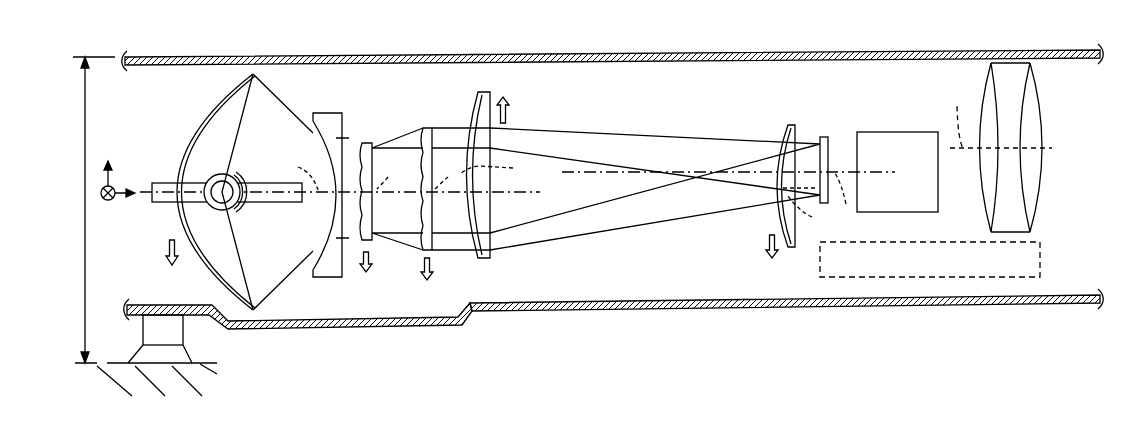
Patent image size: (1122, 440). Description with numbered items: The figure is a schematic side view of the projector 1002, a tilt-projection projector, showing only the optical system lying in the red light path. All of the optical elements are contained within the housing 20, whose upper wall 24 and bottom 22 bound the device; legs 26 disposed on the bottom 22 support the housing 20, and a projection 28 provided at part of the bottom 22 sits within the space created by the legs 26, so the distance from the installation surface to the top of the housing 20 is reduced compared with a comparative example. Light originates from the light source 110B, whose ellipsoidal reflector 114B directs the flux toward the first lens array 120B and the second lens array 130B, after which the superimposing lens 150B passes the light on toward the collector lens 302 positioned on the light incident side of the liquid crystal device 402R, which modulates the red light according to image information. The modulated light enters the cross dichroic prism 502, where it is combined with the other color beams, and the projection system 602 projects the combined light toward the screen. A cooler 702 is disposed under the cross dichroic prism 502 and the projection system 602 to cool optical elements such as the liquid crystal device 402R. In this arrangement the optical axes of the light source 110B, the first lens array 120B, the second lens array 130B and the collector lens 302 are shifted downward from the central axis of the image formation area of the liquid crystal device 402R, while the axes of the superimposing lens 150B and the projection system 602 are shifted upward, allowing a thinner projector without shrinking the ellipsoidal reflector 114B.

The projector 1002 is at (1095, 22).
The housing 20 is at (924, 47).
The upper wall of housing 24 is at (628, 54).
The bottom 22 is at (798, 312).
The projection 28 is at (343, 329).
The legs 26 is at (183, 328).
The light source 110B is at (197, 111).
The ellipsoidal reflector 114B is at (182, 157).
The first lens array 120B is at (365, 143).
The second lens array 130B is at (426, 128).
The superimposing lens 150B is at (486, 92).
The collector lens 302 is at (792, 248).
The liquid crystal device 402R is at (824, 137).
The cross dichroic prism 502 is at (887, 132).
The projection system 602 is at (1042, 117).
The cooler 702 is at (1043, 262).